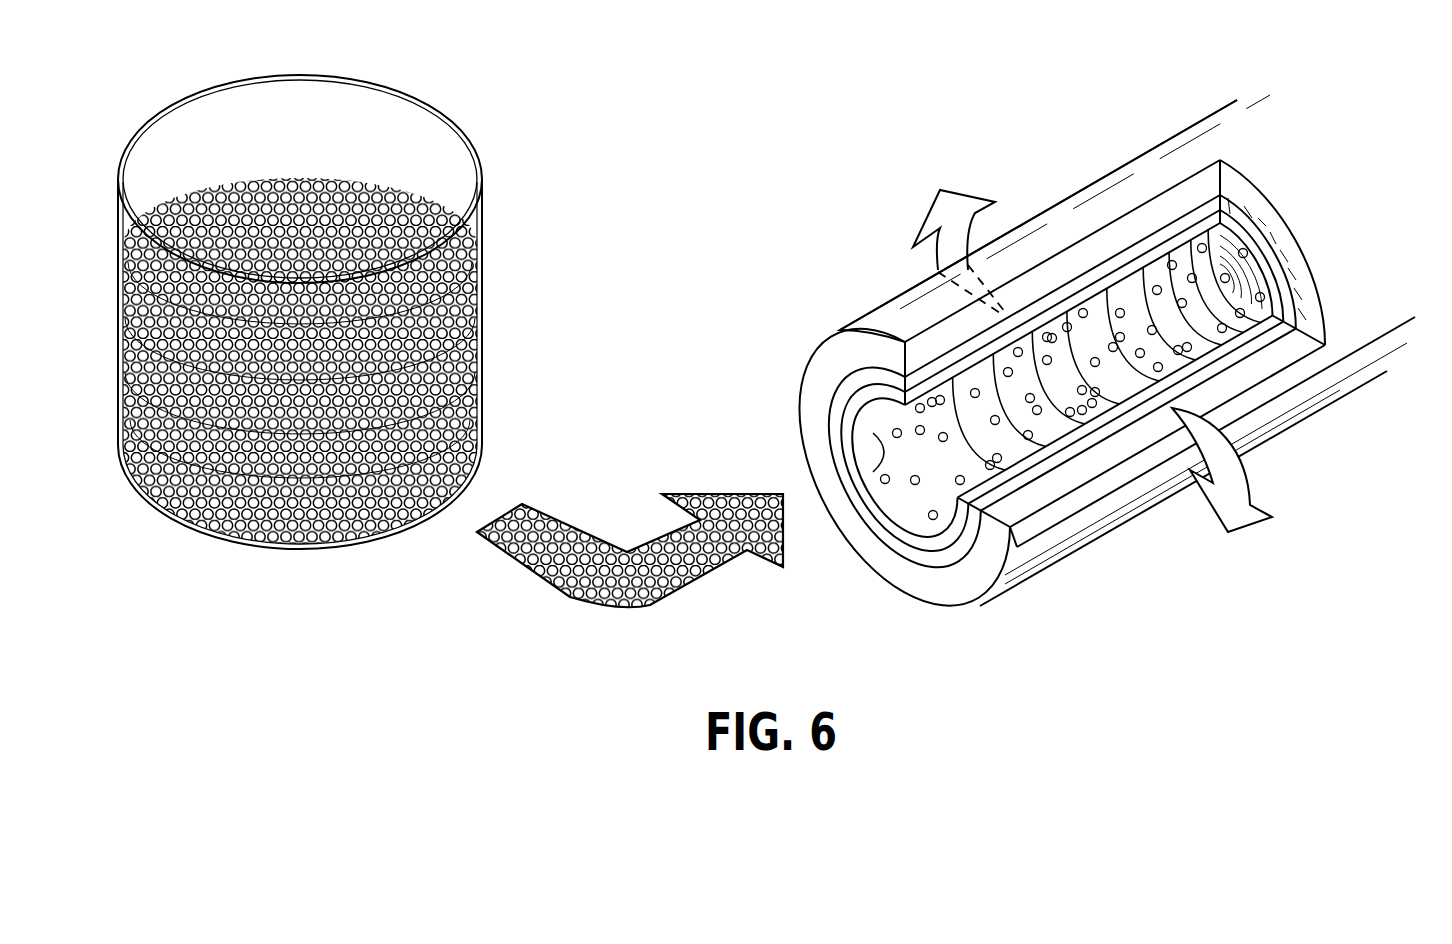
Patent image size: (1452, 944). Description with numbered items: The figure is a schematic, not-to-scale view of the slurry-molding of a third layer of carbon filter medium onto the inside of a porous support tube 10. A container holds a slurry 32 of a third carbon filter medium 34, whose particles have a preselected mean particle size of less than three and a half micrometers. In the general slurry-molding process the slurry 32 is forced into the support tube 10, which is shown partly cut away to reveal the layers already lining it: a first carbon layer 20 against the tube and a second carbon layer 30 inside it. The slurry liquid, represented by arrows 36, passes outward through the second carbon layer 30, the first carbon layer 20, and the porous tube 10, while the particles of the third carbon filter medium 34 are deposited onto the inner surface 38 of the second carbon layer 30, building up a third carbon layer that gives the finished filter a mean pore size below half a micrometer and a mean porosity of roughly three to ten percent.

The porous support tube 10 is at (1007, 582).
The first carbon layer 20 is at (1038, 462).
The second carbon layer 30 is at (1097, 417).
The slurry 32 is at (455, 337).
The third carbon filter medium 34 is at (915, 485).
The arrows 36 is at (965, 192).
The inner surface 38 is at (873, 472).